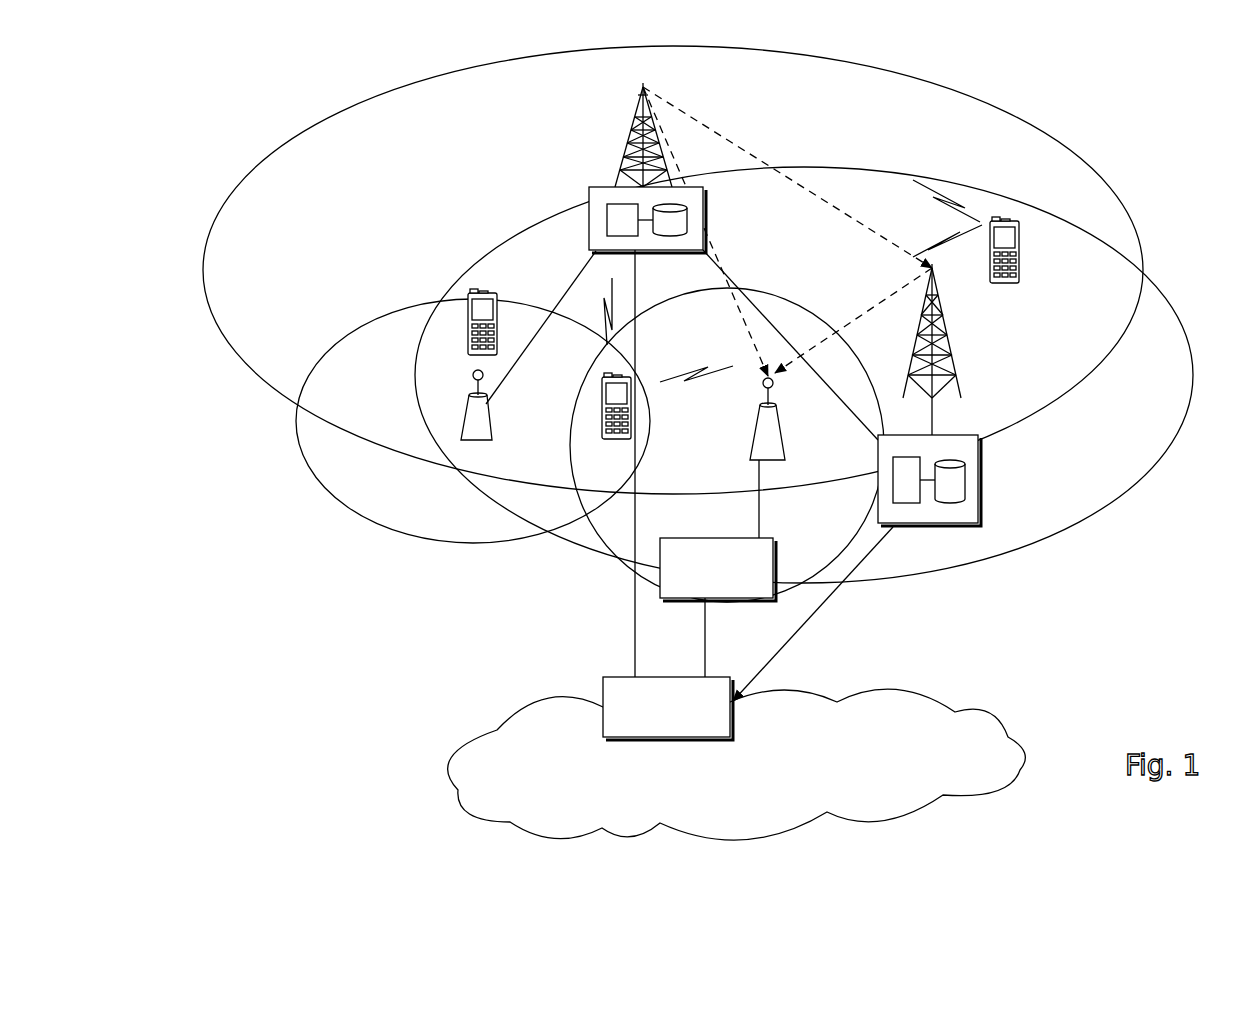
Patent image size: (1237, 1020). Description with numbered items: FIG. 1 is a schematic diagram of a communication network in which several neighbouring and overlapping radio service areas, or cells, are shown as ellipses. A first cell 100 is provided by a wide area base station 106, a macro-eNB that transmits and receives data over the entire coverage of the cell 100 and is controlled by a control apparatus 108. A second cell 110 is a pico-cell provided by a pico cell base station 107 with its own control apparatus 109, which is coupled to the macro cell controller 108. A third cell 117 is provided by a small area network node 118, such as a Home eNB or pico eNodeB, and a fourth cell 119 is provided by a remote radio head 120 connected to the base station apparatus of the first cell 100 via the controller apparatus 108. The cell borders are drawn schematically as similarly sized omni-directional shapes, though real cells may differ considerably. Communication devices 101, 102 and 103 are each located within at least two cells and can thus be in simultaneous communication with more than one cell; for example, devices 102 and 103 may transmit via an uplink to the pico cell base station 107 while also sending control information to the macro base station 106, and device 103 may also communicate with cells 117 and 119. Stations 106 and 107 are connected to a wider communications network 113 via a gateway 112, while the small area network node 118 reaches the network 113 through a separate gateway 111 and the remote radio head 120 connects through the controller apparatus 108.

The first cell 100 is at (290, 133).
The communication device 101 is at (468, 320).
The communication device 102 is at (1020, 252).
The communication device 103 is at (602, 400).
The wide area base station 106 is at (627, 147).
The pico cell base station 107 is at (955, 353).
The control apparatus 108 is at (589, 203).
The control apparatus 109 is at (968, 510).
The second cell 110 is at (1124, 492).
The gateway 111 is at (668, 573).
The gateway 112 is at (606, 680).
The wider communications network 113 is at (527, 748).
The third cell 117 is at (806, 305).
The small area network node 118 is at (768, 440).
The fourth cell 119 is at (373, 530).
The remote radio head 120 is at (466, 403).